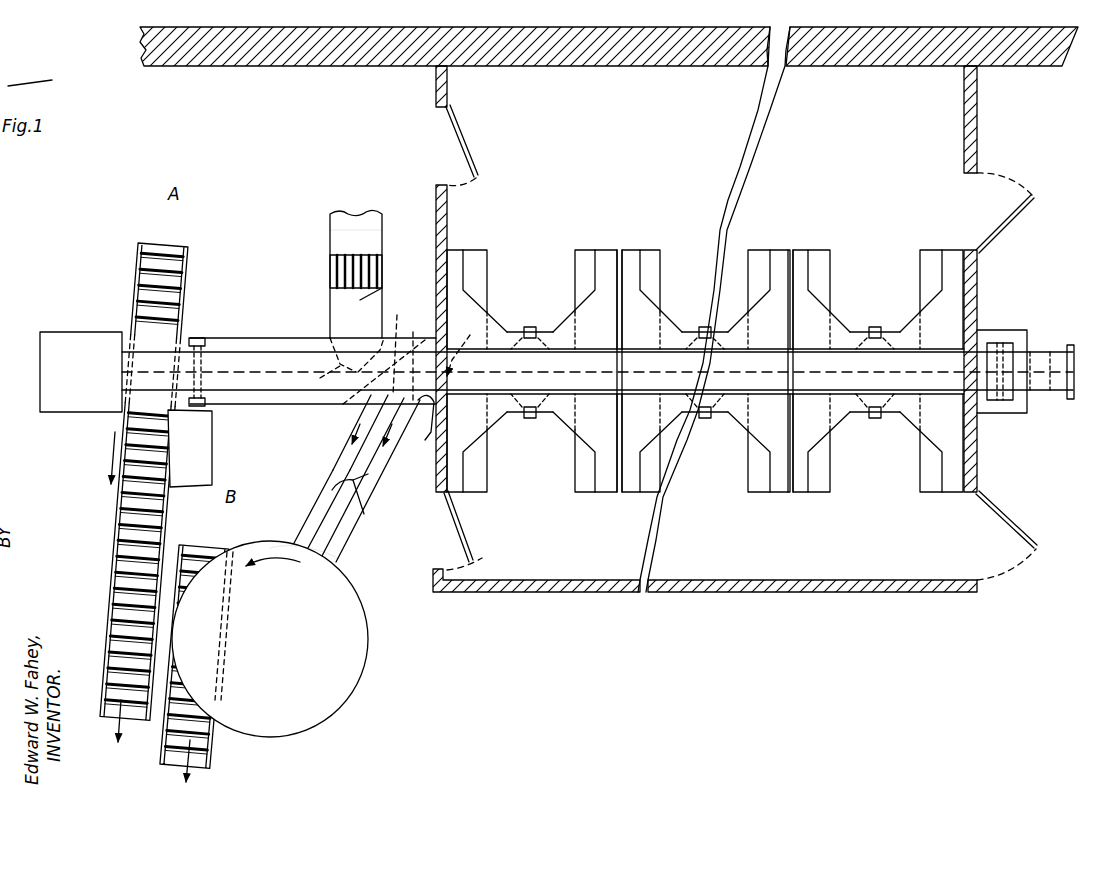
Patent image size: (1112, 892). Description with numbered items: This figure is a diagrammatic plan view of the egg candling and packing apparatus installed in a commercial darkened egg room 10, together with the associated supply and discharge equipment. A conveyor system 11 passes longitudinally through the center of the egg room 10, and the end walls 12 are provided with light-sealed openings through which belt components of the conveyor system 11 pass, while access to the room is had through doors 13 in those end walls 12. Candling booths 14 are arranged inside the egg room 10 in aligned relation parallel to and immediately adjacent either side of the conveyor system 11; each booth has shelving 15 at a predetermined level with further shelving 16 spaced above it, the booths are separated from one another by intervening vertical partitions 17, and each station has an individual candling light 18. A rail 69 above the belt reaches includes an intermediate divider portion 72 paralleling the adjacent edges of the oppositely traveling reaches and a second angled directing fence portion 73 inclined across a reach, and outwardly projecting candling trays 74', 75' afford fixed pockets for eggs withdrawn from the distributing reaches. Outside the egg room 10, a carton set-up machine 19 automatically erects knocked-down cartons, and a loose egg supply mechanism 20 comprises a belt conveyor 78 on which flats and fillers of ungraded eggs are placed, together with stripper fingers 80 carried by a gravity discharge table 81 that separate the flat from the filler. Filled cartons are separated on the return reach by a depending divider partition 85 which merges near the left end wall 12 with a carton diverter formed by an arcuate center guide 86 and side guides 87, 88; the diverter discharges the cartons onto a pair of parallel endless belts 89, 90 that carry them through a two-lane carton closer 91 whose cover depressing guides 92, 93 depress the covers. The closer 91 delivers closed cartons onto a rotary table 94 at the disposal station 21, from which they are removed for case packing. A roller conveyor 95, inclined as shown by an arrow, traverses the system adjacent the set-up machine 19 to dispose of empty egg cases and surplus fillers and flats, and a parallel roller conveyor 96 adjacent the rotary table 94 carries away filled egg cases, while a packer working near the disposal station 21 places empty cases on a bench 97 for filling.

The egg room 10 is at (570, 595).
The conveyor system 11 is at (246, 332).
The end walls 12 is at (437, 494).
The doors 13 is at (469, 139).
The candling booths 14 is at (526, 276).
The shelving 15 is at (488, 264).
The blade 16 is at (456, 262).
The vertical partitions 17 is at (620, 292).
The candling light 18 is at (530, 327).
The carton set-up machine 19 is at (77, 333).
The loose egg supply mechanism 20 is at (330, 240).
The disposal station 21 is at (366, 552).
The rail 69 is at (337, 362).
The intermediate divider portion 72 is at (375, 381).
The second angled directing fence portion 73 is at (462, 346).
The candling tray 74' is at (546, 430).
The candling tray 75' is at (572, 331).
The belt conveyor 78 is at (380, 239).
The stripper fingers 80 is at (330, 267).
The gravity discharge table 81 is at (366, 300).
The divider partition 85 is at (620, 370).
The arcuate center guide 86 is at (418, 356).
The side guide 87 is at (400, 344).
The side guide 88 is at (385, 478).
The endless belt 89 is at (360, 418).
The endless belt 90 is at (366, 477).
The carton closer 91 is at (322, 492).
The cover depressing guide 92 is at (333, 482).
The cover depressing guide 93 is at (362, 508).
The rotary table 94 is at (350, 668).
The roller conveyor 95 is at (168, 256).
The roller conveyor 96 is at (205, 750).
The bench 97 is at (205, 451).